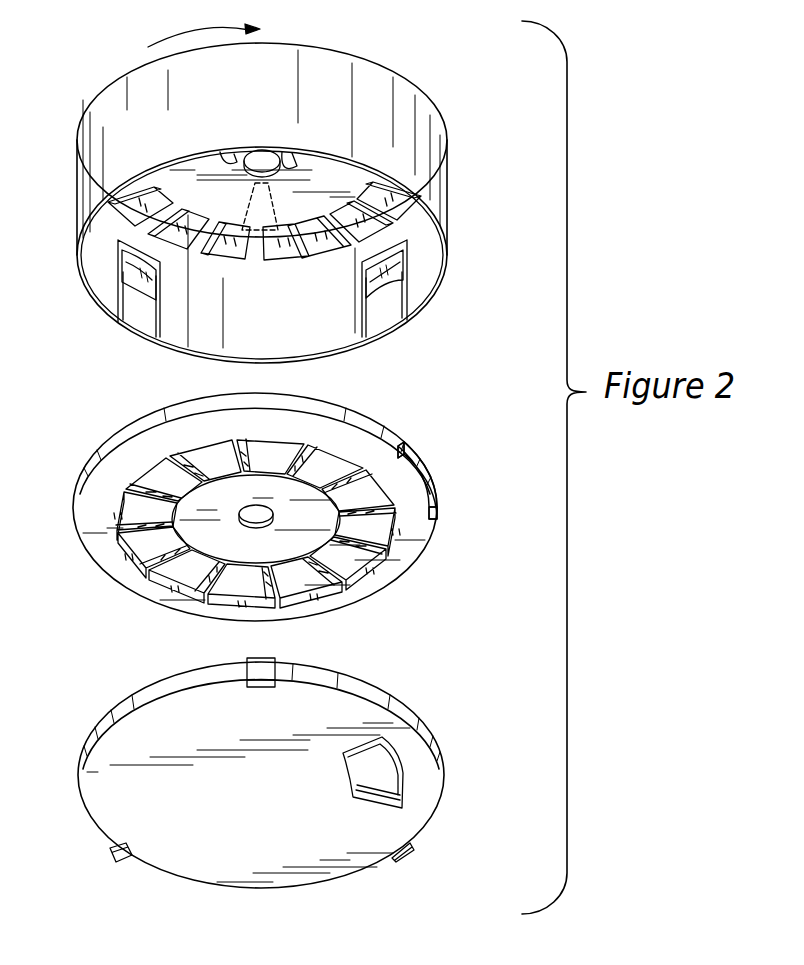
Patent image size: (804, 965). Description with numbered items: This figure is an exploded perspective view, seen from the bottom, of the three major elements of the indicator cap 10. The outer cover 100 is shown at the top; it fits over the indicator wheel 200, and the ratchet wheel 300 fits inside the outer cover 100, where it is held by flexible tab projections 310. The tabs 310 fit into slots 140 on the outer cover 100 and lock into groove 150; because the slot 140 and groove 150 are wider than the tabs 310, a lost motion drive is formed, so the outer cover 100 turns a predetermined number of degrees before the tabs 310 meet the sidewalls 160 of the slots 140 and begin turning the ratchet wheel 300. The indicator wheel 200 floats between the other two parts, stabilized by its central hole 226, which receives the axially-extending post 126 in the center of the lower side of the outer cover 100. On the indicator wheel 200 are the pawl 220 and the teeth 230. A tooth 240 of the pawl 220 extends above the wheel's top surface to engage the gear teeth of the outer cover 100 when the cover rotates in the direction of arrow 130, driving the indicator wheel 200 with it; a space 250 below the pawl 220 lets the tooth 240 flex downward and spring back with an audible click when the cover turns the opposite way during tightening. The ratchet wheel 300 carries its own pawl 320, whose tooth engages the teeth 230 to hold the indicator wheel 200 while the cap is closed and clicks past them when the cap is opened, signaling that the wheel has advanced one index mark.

The indicator cap 10 is at (567, 678).
The outer cover 100 is at (440, 188).
The axially-extending post 126 is at (273, 163).
The arrow 130 is at (178, 36).
The slots 140 is at (217, 155).
The groove 150 is at (138, 270).
The sidewalls of slot 160 is at (367, 303).
The indicator wheel 200 is at (105, 558).
The pawl 220 is at (432, 472).
The central hole 226 is at (263, 525).
The teeth 230 is at (203, 580).
The tooth 240 is at (407, 450).
The space 250 is at (435, 510).
The ratchet wheel 300 is at (157, 840).
The flexible tab projections 310 is at (255, 673).
The pawl 320 is at (390, 767).